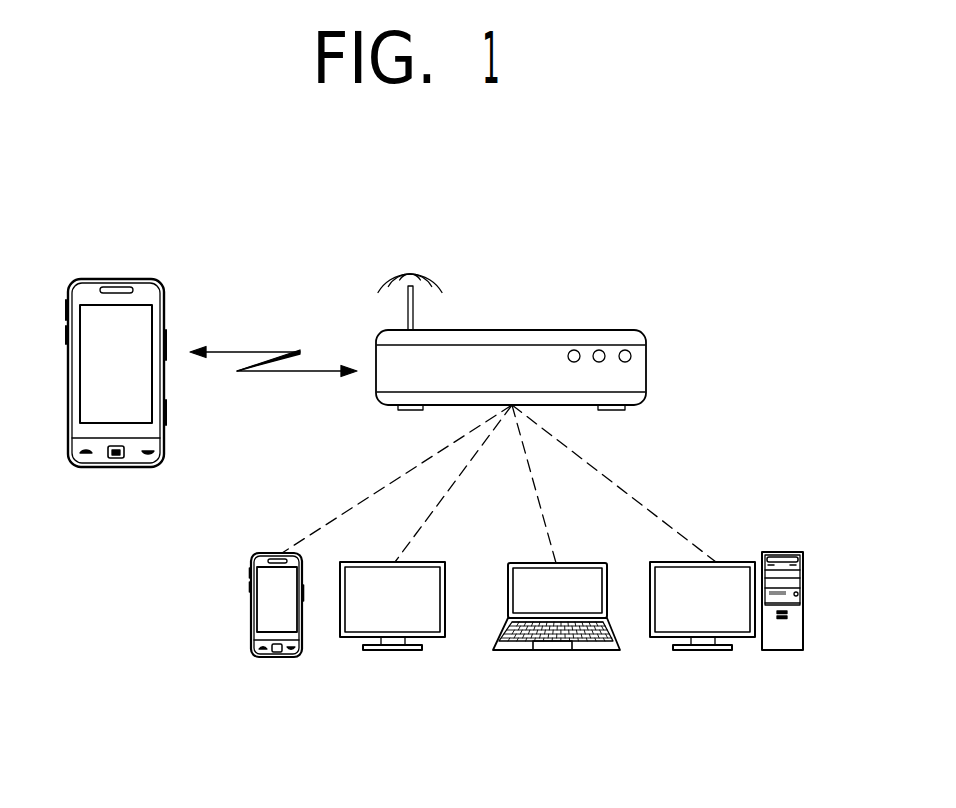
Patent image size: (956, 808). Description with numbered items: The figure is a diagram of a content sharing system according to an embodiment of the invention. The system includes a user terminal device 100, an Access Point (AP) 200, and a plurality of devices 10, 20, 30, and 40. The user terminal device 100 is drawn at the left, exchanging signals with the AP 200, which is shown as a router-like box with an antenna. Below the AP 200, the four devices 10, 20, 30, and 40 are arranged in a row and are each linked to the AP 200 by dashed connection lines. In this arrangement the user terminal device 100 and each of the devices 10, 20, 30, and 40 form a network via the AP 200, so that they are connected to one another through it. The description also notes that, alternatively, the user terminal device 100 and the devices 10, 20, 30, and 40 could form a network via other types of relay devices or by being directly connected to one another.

The user terminal device 100 is at (112, 279).
The Access Point (AP) 200 is at (560, 330).
The device 10 is at (277, 658).
The device 20 is at (385, 652).
The device 30 is at (515, 652).
The device 40 is at (702, 652).